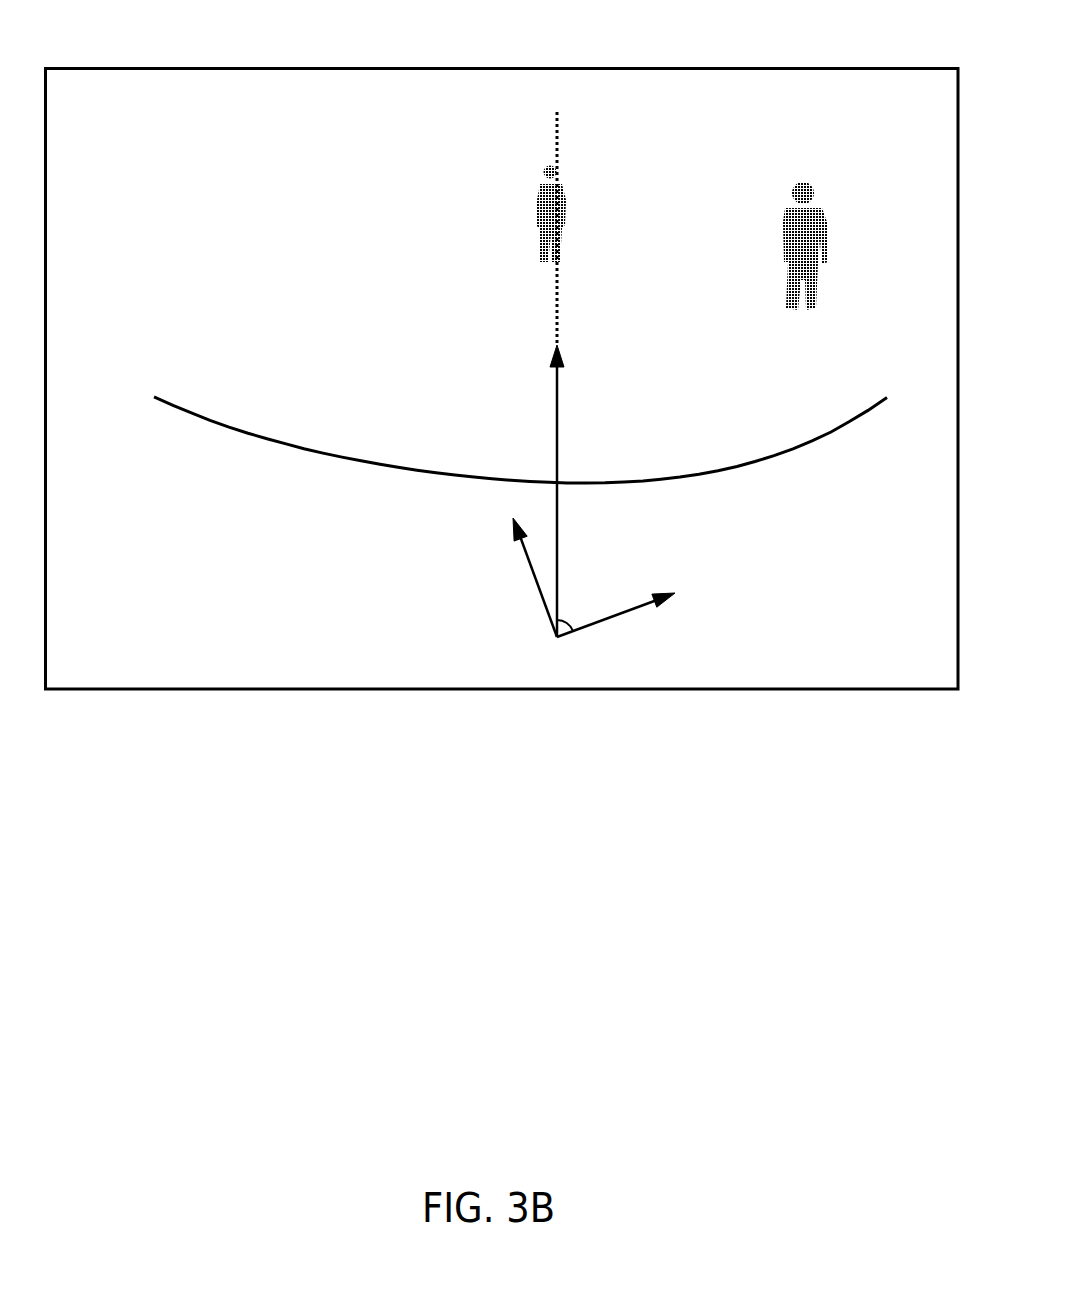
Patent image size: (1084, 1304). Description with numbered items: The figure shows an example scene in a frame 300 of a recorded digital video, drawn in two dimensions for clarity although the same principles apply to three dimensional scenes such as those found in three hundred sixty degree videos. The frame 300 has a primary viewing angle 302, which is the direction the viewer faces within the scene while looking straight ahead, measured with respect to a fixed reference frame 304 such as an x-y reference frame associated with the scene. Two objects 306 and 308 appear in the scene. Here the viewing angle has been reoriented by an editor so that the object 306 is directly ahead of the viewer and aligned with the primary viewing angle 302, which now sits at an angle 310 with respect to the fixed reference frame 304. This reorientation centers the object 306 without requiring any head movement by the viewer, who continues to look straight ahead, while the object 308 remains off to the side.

The frame 300 is at (707, 59).
The primary viewing angle 302 is at (558, 412).
The fixed reference frame 304 is at (615, 615).
The object 306 is at (565, 196).
The object 308 is at (823, 212).
The angle 310 is at (565, 608).